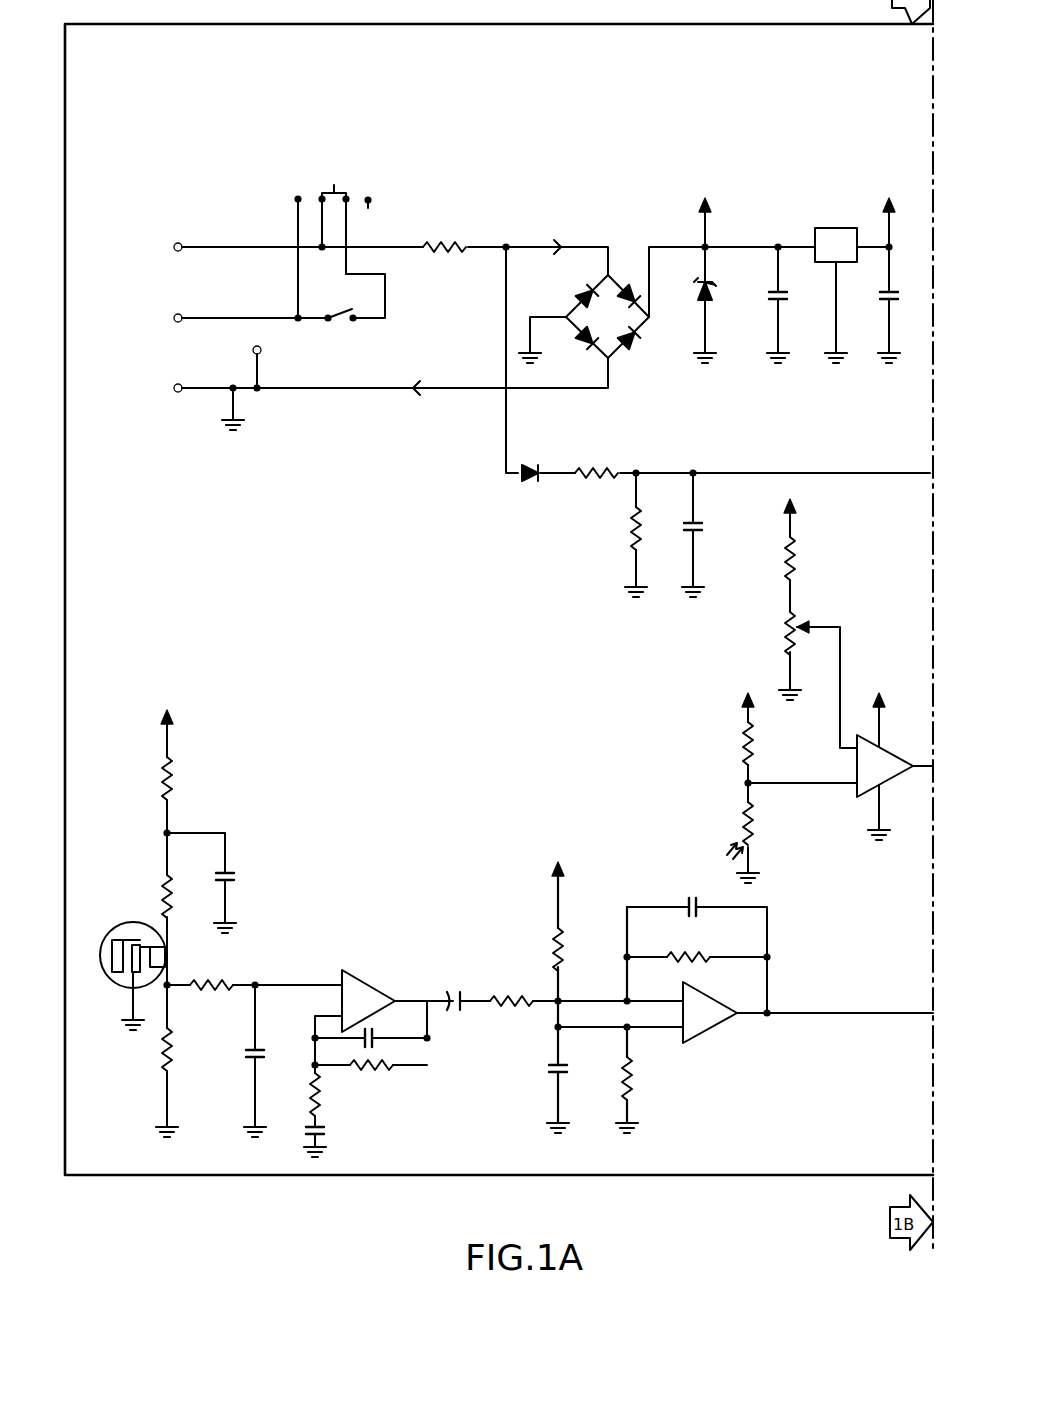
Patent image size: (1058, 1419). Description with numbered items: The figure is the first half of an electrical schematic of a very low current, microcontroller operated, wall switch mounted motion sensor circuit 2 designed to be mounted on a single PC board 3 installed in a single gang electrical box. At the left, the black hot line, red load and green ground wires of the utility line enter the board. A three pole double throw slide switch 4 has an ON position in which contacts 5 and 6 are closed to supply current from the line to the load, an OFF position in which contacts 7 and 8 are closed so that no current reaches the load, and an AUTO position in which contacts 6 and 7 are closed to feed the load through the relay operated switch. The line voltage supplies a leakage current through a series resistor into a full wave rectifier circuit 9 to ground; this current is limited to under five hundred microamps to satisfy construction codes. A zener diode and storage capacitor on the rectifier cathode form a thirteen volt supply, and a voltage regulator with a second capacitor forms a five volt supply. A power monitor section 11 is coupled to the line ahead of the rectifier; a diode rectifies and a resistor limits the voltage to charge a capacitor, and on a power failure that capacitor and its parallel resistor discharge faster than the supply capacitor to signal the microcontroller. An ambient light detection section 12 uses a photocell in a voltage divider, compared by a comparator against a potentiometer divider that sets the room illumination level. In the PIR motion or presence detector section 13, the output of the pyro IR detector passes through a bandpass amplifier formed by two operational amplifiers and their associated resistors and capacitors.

The motion sensor circuit 2 is at (643, 127).
The PC board 3 is at (65, 552).
The switch 4 is at (385, 165).
The contact 5 is at (298, 199).
The contact 6 is at (305, 201).
The contact 7 is at (350, 202).
The contact 8 is at (372, 201).
The full wave rectifier circuit 9 is at (616, 329).
The power monitor section 11 is at (608, 523).
The ambient light detection section 12 is at (722, 783).
The PIR motion or presence detector section 13 is at (456, 918).